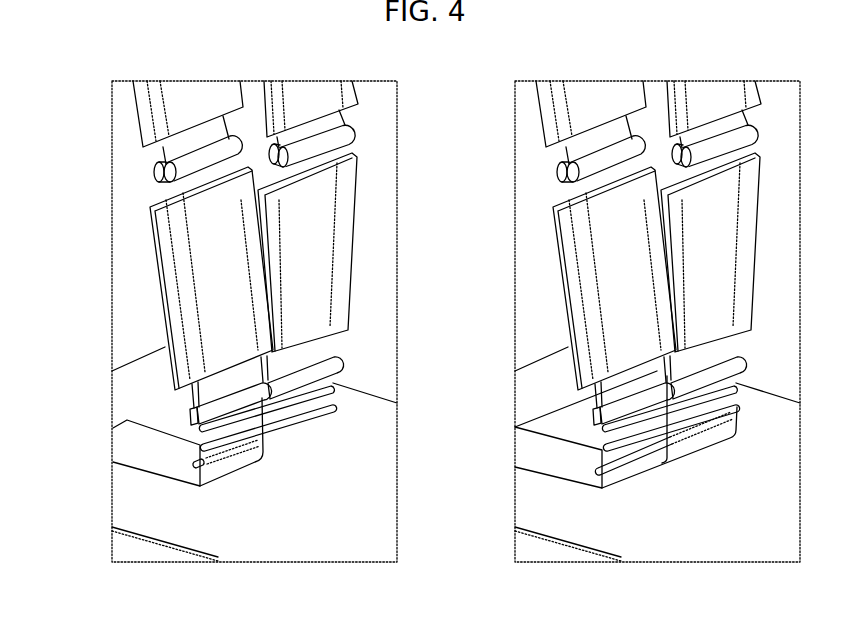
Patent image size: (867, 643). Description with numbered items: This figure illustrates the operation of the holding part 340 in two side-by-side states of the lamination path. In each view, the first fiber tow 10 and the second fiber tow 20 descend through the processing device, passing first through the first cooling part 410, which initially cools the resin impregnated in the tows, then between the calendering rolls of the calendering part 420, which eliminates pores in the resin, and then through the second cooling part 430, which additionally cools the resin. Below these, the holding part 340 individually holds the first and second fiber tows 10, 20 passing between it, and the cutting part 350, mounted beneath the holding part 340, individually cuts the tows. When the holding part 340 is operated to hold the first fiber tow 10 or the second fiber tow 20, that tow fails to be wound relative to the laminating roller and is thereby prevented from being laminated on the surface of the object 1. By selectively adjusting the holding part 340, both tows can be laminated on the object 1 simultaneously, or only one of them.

The object 1 is at (272, 523).
The first fiber tow 10 is at (125, 449).
The second fiber tow 20 is at (568, 421).
The holding part 340 is at (333, 361).
The cutting part 350 is at (330, 384).
The first cooling part 410 is at (150, 116).
The calendering part 420 is at (157, 174).
The second cooling part 430 is at (180, 296).